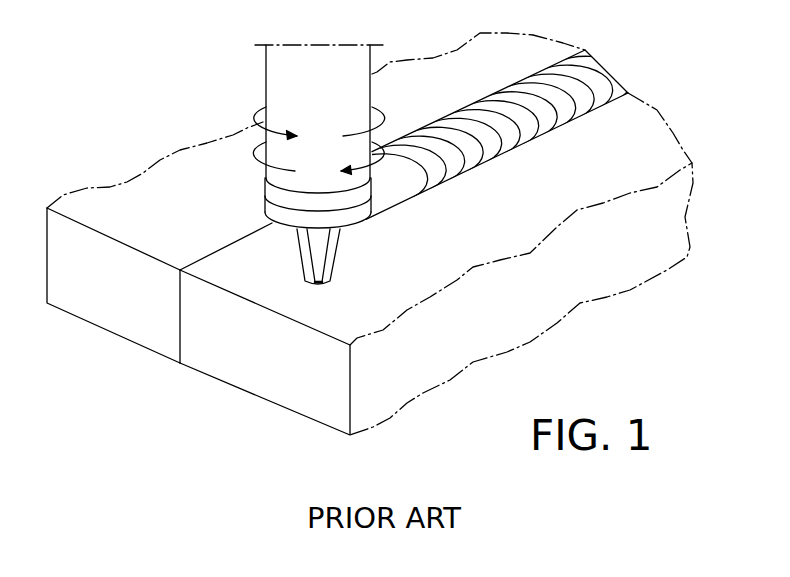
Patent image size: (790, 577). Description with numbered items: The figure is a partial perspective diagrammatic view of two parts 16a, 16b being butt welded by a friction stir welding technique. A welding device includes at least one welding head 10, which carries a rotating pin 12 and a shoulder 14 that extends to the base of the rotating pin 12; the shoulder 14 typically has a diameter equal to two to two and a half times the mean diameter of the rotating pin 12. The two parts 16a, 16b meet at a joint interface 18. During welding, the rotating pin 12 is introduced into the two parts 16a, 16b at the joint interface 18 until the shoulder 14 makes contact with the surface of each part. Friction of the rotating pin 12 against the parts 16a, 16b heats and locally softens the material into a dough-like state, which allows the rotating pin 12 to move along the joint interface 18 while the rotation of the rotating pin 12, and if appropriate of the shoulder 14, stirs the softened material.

The welding head 10 is at (287, 229).
The rotating pin 12 is at (305, 263).
The shoulder 14 is at (277, 225).
The part 16a is at (307, 387).
The part 16b is at (85, 302).
The joint interface 18 is at (178, 338).